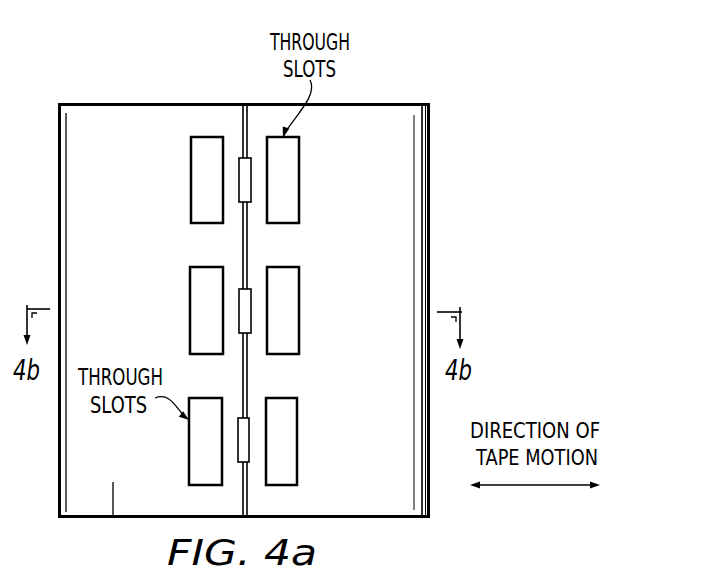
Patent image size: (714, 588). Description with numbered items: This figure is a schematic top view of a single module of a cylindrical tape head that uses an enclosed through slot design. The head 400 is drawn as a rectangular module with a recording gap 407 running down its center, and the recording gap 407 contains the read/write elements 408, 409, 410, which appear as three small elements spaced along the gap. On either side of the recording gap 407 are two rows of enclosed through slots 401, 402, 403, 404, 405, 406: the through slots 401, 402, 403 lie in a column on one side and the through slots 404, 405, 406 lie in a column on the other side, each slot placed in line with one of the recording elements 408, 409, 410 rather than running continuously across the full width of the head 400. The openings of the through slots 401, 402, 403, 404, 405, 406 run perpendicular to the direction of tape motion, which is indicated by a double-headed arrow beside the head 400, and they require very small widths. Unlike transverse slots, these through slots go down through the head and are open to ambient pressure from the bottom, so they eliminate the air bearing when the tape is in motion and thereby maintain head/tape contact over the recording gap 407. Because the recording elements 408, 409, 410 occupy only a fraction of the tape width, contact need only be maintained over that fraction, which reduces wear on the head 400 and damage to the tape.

The head 400 is at (90, 57).
The through slot 401 is at (197, 180).
The through slot 402 is at (196, 311).
The through slot 403 is at (194, 440).
The through slot 404 is at (294, 181).
The through slot 405 is at (294, 311).
The through slot 406 is at (292, 441).
The recording gap 407 is at (243, 118).
The read/write element 408 is at (251, 180).
The read/write element 409 is at (251, 310).
The read/write element 410 is at (249, 440).